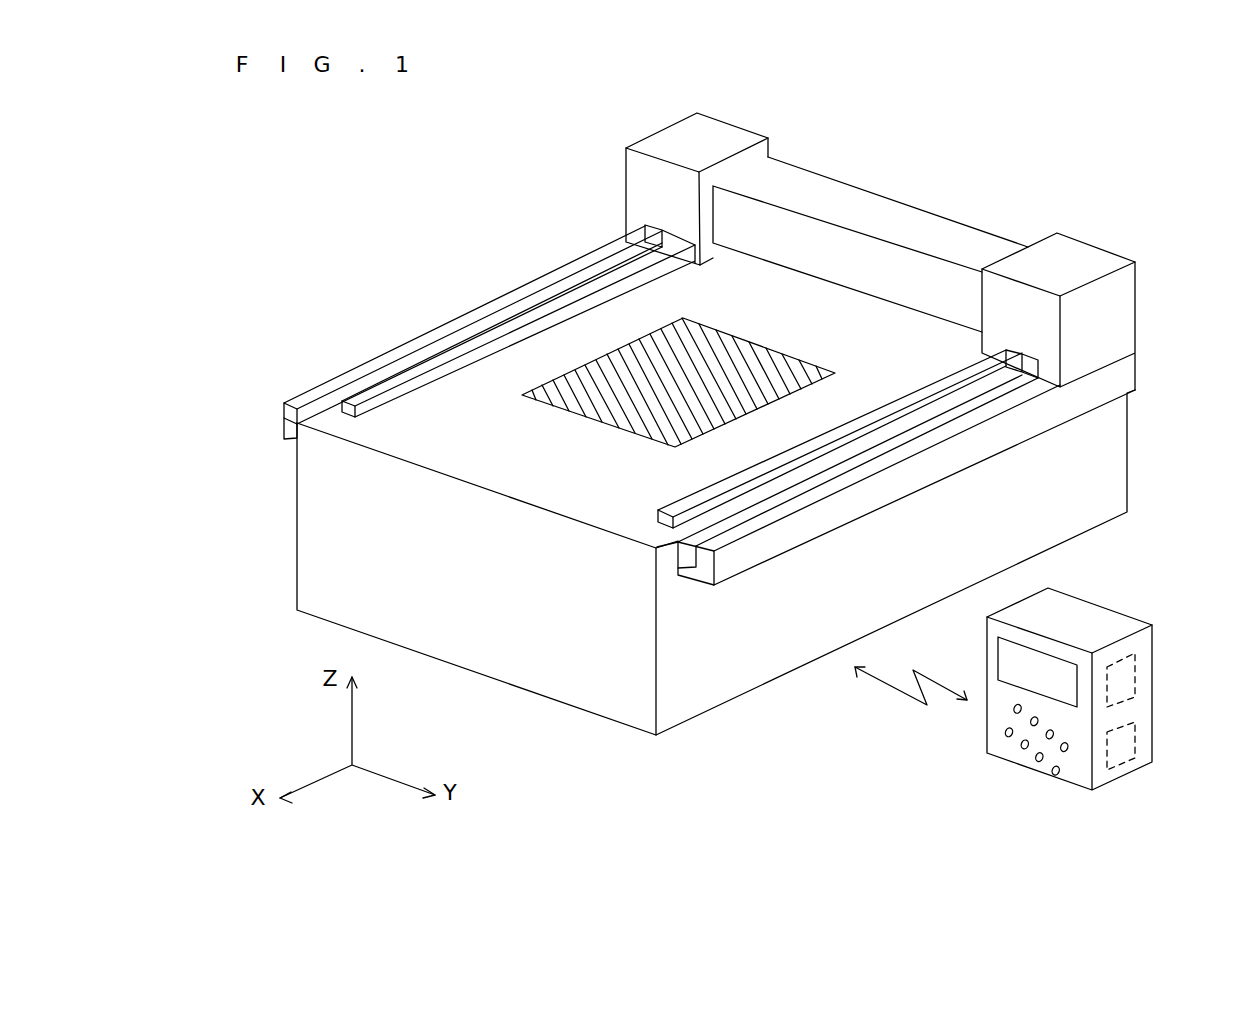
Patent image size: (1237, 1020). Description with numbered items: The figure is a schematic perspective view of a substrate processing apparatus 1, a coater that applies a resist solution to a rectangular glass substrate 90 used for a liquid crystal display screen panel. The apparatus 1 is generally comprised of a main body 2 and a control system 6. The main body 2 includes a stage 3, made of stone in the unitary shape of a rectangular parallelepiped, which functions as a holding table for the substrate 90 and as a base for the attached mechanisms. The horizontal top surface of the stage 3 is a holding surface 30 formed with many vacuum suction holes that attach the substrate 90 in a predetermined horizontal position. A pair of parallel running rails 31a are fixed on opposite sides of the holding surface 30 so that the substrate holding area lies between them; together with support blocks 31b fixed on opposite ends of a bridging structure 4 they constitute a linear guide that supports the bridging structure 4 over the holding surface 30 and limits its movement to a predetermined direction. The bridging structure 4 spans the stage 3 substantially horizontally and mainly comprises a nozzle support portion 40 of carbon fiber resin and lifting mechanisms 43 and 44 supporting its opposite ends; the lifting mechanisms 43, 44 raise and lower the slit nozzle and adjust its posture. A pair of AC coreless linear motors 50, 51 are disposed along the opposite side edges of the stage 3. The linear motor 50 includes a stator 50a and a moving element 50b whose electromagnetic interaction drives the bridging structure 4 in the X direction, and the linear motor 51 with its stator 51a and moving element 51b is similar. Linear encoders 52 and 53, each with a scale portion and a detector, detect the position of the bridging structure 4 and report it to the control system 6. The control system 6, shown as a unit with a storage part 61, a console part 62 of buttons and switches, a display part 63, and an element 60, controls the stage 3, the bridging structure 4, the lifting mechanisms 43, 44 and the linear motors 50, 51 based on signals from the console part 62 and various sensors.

The substrate processing apparatus 1 is at (234, 178).
The main body 2 is at (378, 286).
The stage 3 is at (294, 498).
The bridging structure 4 is at (610, 139).
The holding surface 30 is at (368, 433).
The running rails 31a is at (297, 438).
The support blocks 31b is at (677, 240).
The nozzle support portion 40 is at (945, 210).
The lifting mechanism 43 is at (750, 128).
The lifting mechanism 44 is at (1092, 243).
The linear motor 50 is at (478, 221).
The stator 50a is at (605, 270).
The moving element 50b is at (627, 226).
The linear motor 51 is at (1066, 452).
The stator 51a is at (940, 418).
The moving element 51b is at (1040, 378).
The linear encoder 52 is at (318, 384).
The linear encoder 53 is at (765, 562).
The control system 6 is at (1115, 608).
The control unit 60 is at (1135, 655).
The storage part 61 is at (1135, 724).
The console part 62 is at (1000, 728).
The display part 63 is at (1005, 653).
The substrate 90 is at (588, 420).